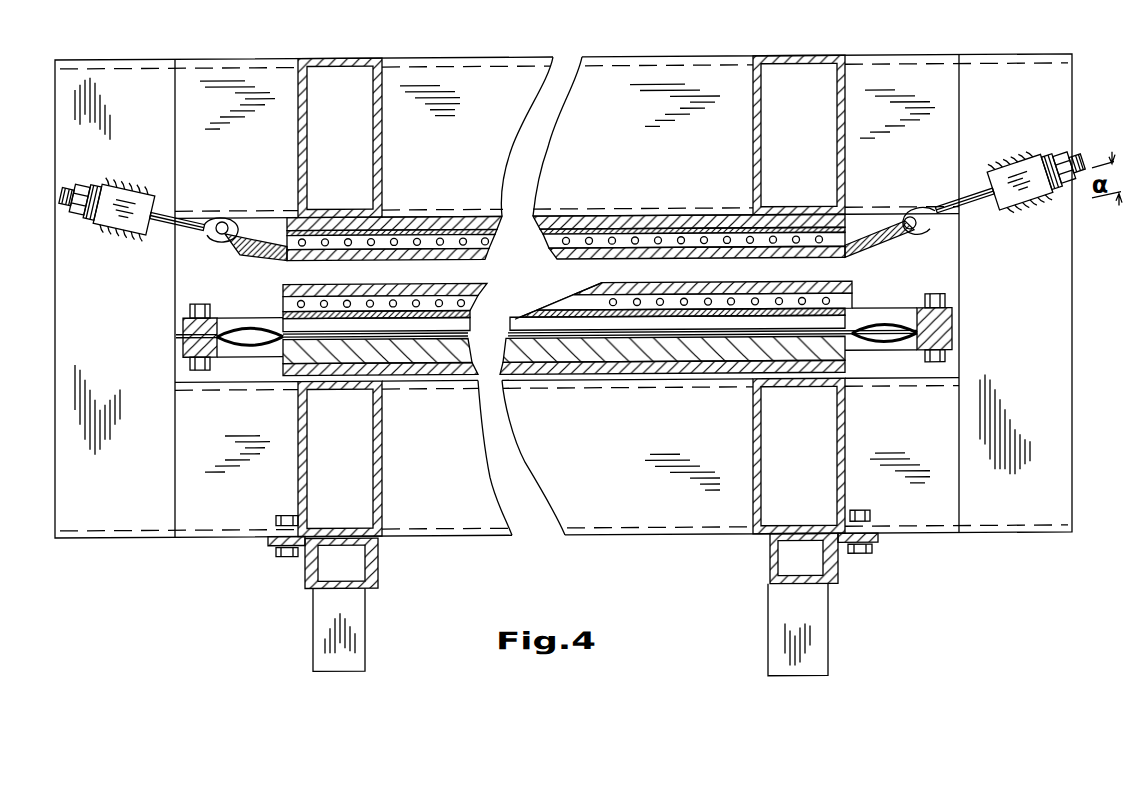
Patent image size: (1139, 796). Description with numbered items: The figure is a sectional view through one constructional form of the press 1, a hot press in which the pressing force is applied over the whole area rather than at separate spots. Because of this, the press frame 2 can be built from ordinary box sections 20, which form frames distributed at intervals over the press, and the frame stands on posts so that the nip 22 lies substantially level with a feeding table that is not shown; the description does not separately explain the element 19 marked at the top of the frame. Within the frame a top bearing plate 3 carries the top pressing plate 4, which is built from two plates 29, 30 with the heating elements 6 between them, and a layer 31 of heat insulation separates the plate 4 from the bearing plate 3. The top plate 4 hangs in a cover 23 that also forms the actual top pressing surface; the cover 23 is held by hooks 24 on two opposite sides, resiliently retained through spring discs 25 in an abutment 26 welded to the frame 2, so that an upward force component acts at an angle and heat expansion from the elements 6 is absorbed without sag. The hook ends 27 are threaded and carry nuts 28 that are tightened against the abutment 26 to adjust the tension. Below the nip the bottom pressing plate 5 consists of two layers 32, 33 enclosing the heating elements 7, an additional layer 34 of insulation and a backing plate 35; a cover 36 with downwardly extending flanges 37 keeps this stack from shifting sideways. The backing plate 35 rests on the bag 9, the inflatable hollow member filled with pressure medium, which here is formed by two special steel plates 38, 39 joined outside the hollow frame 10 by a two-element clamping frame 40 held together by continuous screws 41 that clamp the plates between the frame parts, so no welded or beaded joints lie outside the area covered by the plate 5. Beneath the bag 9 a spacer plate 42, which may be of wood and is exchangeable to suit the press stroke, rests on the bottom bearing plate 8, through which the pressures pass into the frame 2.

The press 1 is at (1070, 460).
The press frame 2 is at (585, 517).
The top bearing plate 3 is at (531, 226).
The top pressing plate 4 is at (846, 236).
The bottom pressing plate 5 is at (705, 340).
The heating elements 6 is at (703, 228).
The heating elements 7 is at (656, 306).
The bottom bearing plate 8 is at (637, 366).
The bag 9 is at (472, 326).
The hollow frame 10 is at (250, 360).
The support column 19 is at (752, 87).
The box sections 20 is at (195, 518).
The nip 22 is at (290, 270).
The cover 23 is at (240, 248).
The hooks 24 is at (181, 218).
The spring discs 25 is at (112, 186).
The abutment 26 is at (1042, 216).
The hook ends 27 is at (76, 187).
The nuts 28 is at (96, 188).
The plate 29 is at (268, 216).
The plate 30 is at (286, 243).
The layer of heat insulation 31 is at (631, 232).
The layer 32 is at (285, 296).
The layer 33 is at (288, 308).
The layer of insulation 34 is at (428, 318).
The backing plate 35 is at (567, 327).
The cover 36 is at (637, 288).
The flanges 37 is at (853, 306).
The special steel plate 38 is at (888, 357).
The special steel plate 39 is at (896, 332).
The clamping frame 40 is at (944, 326).
The continuous screws 41 is at (944, 304).
The spacer plate 42 is at (733, 360).